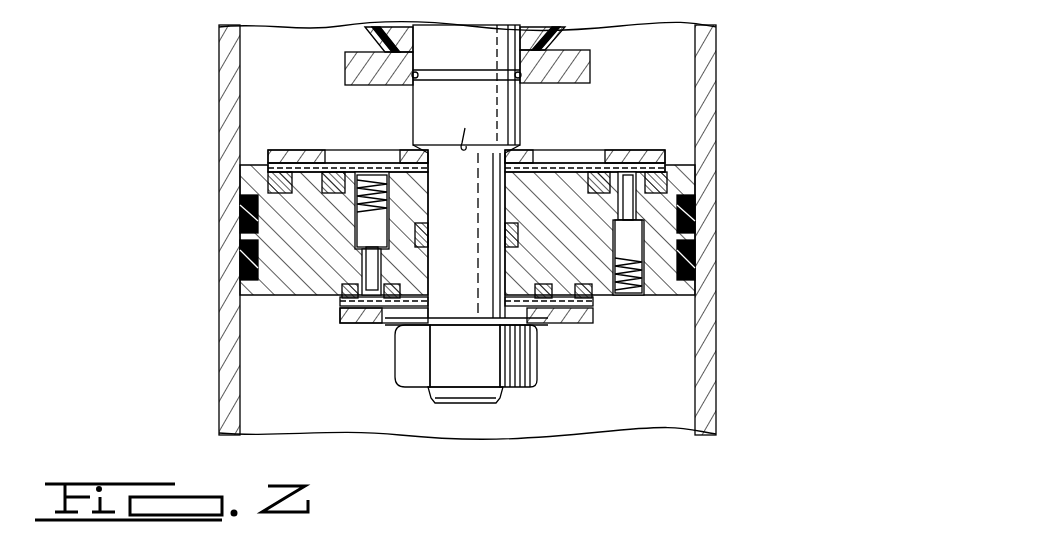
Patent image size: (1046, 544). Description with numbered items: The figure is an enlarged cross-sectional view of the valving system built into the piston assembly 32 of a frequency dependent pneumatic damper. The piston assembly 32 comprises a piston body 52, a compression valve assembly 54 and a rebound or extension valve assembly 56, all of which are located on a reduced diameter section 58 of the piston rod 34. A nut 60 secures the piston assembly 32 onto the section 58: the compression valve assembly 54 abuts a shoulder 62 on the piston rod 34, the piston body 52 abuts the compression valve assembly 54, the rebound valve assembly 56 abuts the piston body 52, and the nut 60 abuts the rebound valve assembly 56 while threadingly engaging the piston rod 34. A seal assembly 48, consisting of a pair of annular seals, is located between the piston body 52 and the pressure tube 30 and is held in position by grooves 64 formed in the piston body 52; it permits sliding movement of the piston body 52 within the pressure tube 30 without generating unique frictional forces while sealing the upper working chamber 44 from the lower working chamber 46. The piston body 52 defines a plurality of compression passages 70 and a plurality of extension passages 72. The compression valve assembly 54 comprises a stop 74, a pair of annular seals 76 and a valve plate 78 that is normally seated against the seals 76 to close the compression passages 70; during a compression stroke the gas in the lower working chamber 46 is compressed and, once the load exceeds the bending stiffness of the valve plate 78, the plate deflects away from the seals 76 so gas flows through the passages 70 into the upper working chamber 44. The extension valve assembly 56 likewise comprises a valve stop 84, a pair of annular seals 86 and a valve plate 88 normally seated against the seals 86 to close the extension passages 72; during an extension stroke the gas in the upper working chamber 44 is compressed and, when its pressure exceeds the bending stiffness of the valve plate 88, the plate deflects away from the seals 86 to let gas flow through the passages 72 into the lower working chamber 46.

The pressure tube 30 is at (708, 49).
The piston assembly 32 is at (610, 127).
The piston rod 34 is at (480, 59).
The upper working chamber 44 is at (338, 127).
The lower working chamber 46 is at (448, 428).
The seal assembly 48 is at (236, 227).
The piston body 52 is at (250, 286).
The compression valve assembly 54 is at (287, 108).
The rebound valve assembly 56 is at (357, 359).
The reduced diameter section 58 is at (477, 236).
The nut 60 is at (528, 378).
The shoulder 62 is at (462, 127).
The grooves 64 is at (240, 210).
The compression passages 70 is at (642, 250).
The extension passages 72 is at (370, 268).
The stop 74 is at (665, 150).
The annular seals 76 is at (584, 172).
The valve plate 78 is at (268, 170).
The valve stop 84 is at (350, 325).
The annular seals 86 is at (545, 300).
The valve plate 88 is at (345, 305).